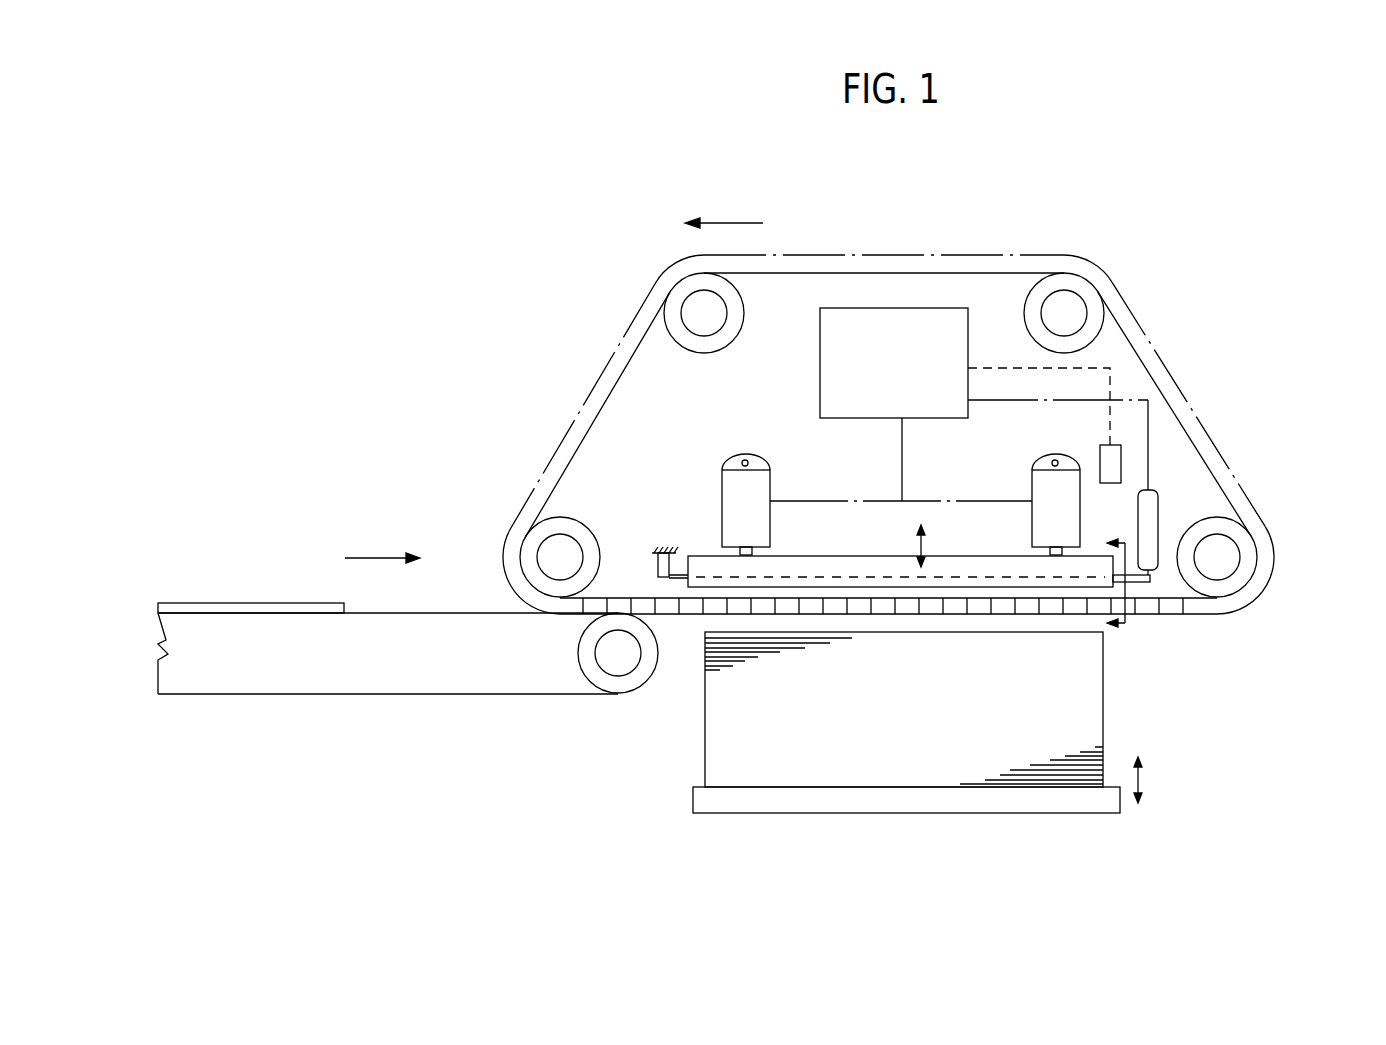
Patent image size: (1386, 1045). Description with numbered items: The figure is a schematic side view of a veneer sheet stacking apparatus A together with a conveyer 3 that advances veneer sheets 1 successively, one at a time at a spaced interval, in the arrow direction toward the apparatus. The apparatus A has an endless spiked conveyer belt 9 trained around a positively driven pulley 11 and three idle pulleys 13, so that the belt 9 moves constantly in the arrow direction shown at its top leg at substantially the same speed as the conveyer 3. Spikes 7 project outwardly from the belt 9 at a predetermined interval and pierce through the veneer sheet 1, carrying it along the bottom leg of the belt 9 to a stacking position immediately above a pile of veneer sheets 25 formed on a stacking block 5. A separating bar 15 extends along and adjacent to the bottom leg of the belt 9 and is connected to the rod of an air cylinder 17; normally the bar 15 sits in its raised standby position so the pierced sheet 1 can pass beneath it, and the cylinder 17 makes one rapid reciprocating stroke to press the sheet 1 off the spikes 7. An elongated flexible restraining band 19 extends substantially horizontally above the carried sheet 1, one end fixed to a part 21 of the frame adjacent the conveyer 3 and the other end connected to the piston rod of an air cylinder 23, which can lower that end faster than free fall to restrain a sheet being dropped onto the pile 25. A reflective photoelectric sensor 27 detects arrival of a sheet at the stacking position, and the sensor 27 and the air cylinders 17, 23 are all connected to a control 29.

The veneer stacking apparatus A is at (525, 385).
The veneer sheet 1 is at (230, 608).
The conveyer 3 is at (385, 613).
The stacking block 5 is at (840, 802).
The spikes 7 is at (703, 608).
The endless spiked conveyer belt 9 is at (788, 272).
The positively driven pulley 11 is at (1250, 552).
The idle pulleys 13 is at (677, 317).
The separating bar 15 is at (815, 565).
The air cylinder 17 is at (757, 492).
The flexible restraining band 19 is at (1140, 583).
The frame part 21 is at (658, 567).
The air cylinder 23 is at (1147, 515).
The pile of veneer sheets 25 is at (772, 742).
The sensor 27 is at (1113, 457).
The control 29 is at (908, 333).